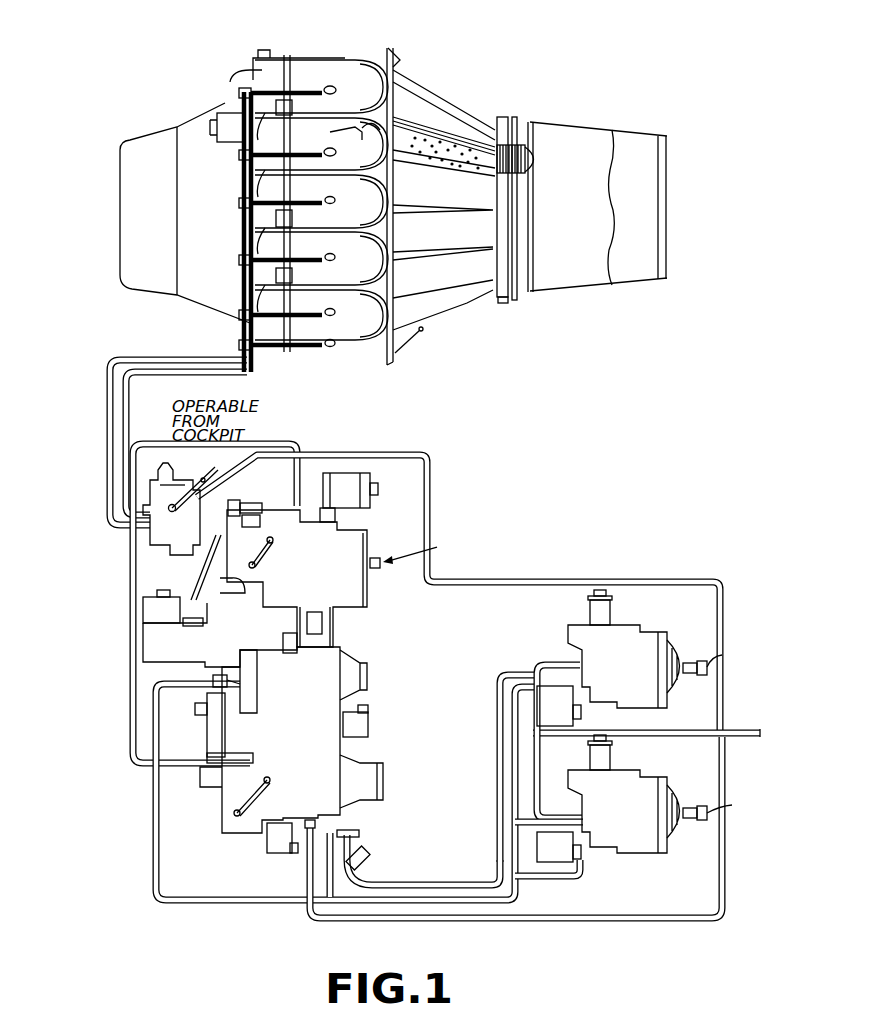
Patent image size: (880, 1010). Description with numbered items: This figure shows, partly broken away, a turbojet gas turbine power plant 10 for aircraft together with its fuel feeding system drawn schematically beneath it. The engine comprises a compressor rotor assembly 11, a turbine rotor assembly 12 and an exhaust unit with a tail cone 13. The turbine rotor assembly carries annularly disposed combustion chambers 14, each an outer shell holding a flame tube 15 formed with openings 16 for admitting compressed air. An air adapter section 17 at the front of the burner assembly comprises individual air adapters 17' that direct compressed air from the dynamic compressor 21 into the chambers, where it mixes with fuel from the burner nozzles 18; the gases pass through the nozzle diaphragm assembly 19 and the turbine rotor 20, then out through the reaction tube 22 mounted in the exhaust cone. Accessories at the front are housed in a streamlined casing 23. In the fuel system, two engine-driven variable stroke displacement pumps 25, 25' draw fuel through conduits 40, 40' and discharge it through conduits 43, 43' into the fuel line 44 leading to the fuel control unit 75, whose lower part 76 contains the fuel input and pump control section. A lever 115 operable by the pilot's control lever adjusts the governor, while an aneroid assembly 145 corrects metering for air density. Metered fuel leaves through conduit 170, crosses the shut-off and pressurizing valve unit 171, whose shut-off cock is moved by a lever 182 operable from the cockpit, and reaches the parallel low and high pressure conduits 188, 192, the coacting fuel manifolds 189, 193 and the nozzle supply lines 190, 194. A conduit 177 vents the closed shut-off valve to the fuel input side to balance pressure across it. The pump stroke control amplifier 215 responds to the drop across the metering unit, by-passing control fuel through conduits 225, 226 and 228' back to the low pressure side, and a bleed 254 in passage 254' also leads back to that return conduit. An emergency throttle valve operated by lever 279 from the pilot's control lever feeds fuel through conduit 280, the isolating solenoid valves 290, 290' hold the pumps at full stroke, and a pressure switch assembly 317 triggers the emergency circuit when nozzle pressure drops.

The gas turbine power plant 10 is at (367, 58).
The compressor rotor assembly 11 is at (268, 57).
The turbine rotor assembly 12 is at (446, 98).
The tail cone 13 is at (582, 141).
The combustion chambers 14 is at (458, 245).
The flame tube 15 is at (453, 143).
The openings 16 is at (422, 150).
The air adapter section 17 is at (308, 182).
The air adapters 17' is at (321, 182).
The burner nozzles 18 is at (433, 152).
The nozzle diaphragm assembly 19 is at (506, 172).
The turbine rotor 20 is at (530, 174).
The dynamic compressor 21 is at (292, 128).
The reaction tube 22 is at (541, 161).
The streamlined casing 23 is at (138, 128).
The variable stroke displacement pump 25 is at (679, 821).
The variable stroke displacement pump 25' is at (674, 616).
The fuel input conduit 40 is at (651, 701).
The fuel input conduit 40' is at (559, 775).
The pump discharge conduit 43 is at (549, 839).
The pump discharge conduit 43' is at (518, 750).
The fuel line 44 is at (438, 880).
The fuel control unit 75 is at (348, 636).
The lower part of fuel control unit 76 is at (301, 733).
The lever 115 is at (264, 549).
The aneroid assembly 145 is at (152, 601).
The conduit 170 is at (200, 556).
The fuel shut-off and two-stage nozzle pressure valve unit 171 is at (165, 541).
The passage or conduit 177 is at (349, 463).
The lever 182 is at (214, 485).
The low pressure conduit 188 is at (110, 508).
The fuel manifold 189 is at (243, 273).
The nozzle supply lines 190 is at (258, 212).
The high pressure conduit 192 is at (128, 392).
The fuel manifold 193 is at (244, 299).
The nozzle supply lines 194 is at (250, 258).
The pump stroke control device or amplifier 215 is at (206, 736).
The conduit 225 is at (555, 879).
The conduit 226 is at (160, 878).
The conduit 228' is at (516, 843).
The bleed 254 is at (394, 608).
The bleed passage 254' is at (295, 865).
The lever 279 is at (267, 780).
The emergency fuel conduit 280 is at (282, 441).
The isolating solenoid valve 290 is at (552, 854).
The isolating solenoid valve 290' is at (559, 706).
The pressure switch assembly 317 is at (371, 505).